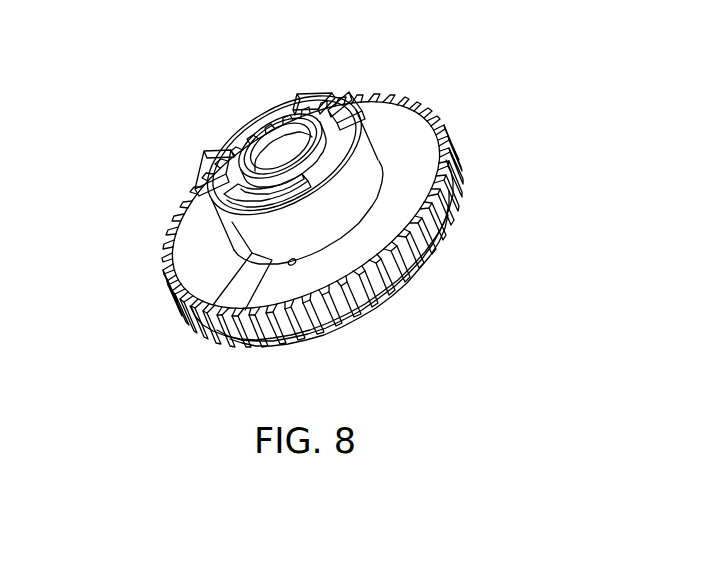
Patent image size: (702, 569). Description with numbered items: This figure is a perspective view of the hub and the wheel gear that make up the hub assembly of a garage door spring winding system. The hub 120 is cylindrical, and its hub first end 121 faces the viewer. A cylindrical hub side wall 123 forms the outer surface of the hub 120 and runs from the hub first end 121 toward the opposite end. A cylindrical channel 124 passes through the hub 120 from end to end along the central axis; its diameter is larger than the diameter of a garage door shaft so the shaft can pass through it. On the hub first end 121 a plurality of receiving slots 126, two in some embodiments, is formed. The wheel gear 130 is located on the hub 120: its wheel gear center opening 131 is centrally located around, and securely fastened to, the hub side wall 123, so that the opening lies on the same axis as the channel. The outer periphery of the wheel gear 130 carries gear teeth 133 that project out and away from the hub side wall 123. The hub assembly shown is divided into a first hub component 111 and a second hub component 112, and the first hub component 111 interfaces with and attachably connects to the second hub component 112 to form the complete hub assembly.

The hub 120 is at (221, 130).
The hub first end 121 is at (200, 191).
The cylindrical channel 124 is at (267, 150).
The receiving slots 126 is at (307, 120).
The wheel gear 130 is at (377, 117).
The hub side wall 123 is at (350, 187).
The gear teeth 133 is at (460, 204).
The second hub component 112 is at (360, 250).
The first hub component 111 is at (228, 250).
The wheel gear center opening 131 is at (213, 305).